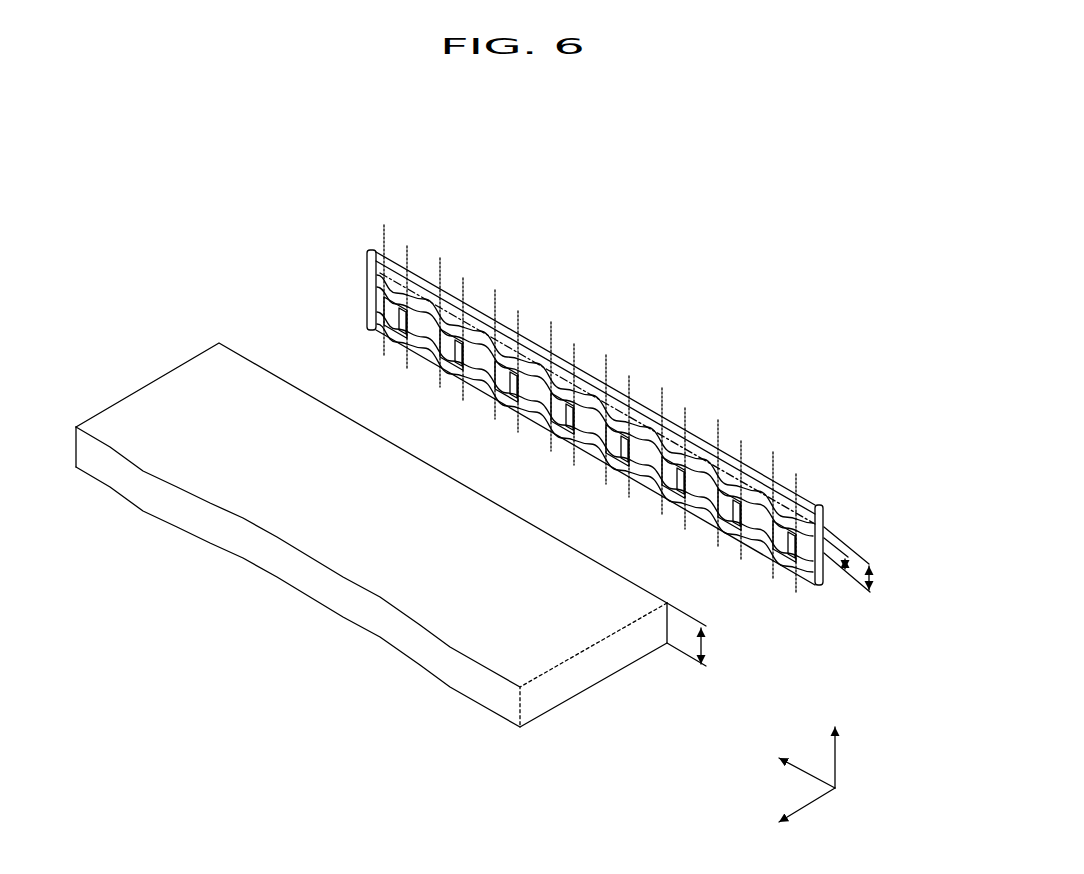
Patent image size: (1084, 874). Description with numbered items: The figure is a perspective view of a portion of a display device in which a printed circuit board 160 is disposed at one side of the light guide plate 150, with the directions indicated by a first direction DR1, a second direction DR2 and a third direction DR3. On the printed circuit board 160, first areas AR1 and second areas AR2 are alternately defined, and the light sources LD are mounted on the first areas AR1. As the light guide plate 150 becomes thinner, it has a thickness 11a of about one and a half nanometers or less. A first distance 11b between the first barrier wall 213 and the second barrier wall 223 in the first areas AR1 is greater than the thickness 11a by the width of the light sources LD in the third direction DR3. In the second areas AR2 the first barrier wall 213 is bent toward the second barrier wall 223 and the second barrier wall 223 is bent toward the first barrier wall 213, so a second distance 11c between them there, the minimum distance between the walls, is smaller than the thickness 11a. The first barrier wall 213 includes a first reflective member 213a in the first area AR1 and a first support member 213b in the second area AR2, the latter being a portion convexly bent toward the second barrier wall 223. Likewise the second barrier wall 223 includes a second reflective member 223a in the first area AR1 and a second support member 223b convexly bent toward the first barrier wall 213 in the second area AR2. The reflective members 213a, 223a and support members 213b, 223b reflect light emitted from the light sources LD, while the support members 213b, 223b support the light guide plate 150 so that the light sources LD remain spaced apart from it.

The light guide plate 150 is at (603, 666).
The printed circuit board 160 is at (816, 505).
The first barrier wall 213 is at (262, 226).
The first reflective member 213a is at (368, 264).
The first support member 213b is at (375, 300).
The second barrier wall 223 is at (262, 294).
The second reflective member 223a is at (382, 324).
The second support member 223b is at (398, 342).
The light sources LD is at (597, 458).
The first areas AR1 is at (592, 392).
The second areas AR2 is at (616, 409).
The thickness of the light guide plate 11a is at (703, 634).
The first distance 11b is at (866, 560).
The second distance 11c is at (848, 567).
The first direction DR1 is at (785, 766).
The second direction DR2 is at (785, 812).
The third direction DR3 is at (835, 743).